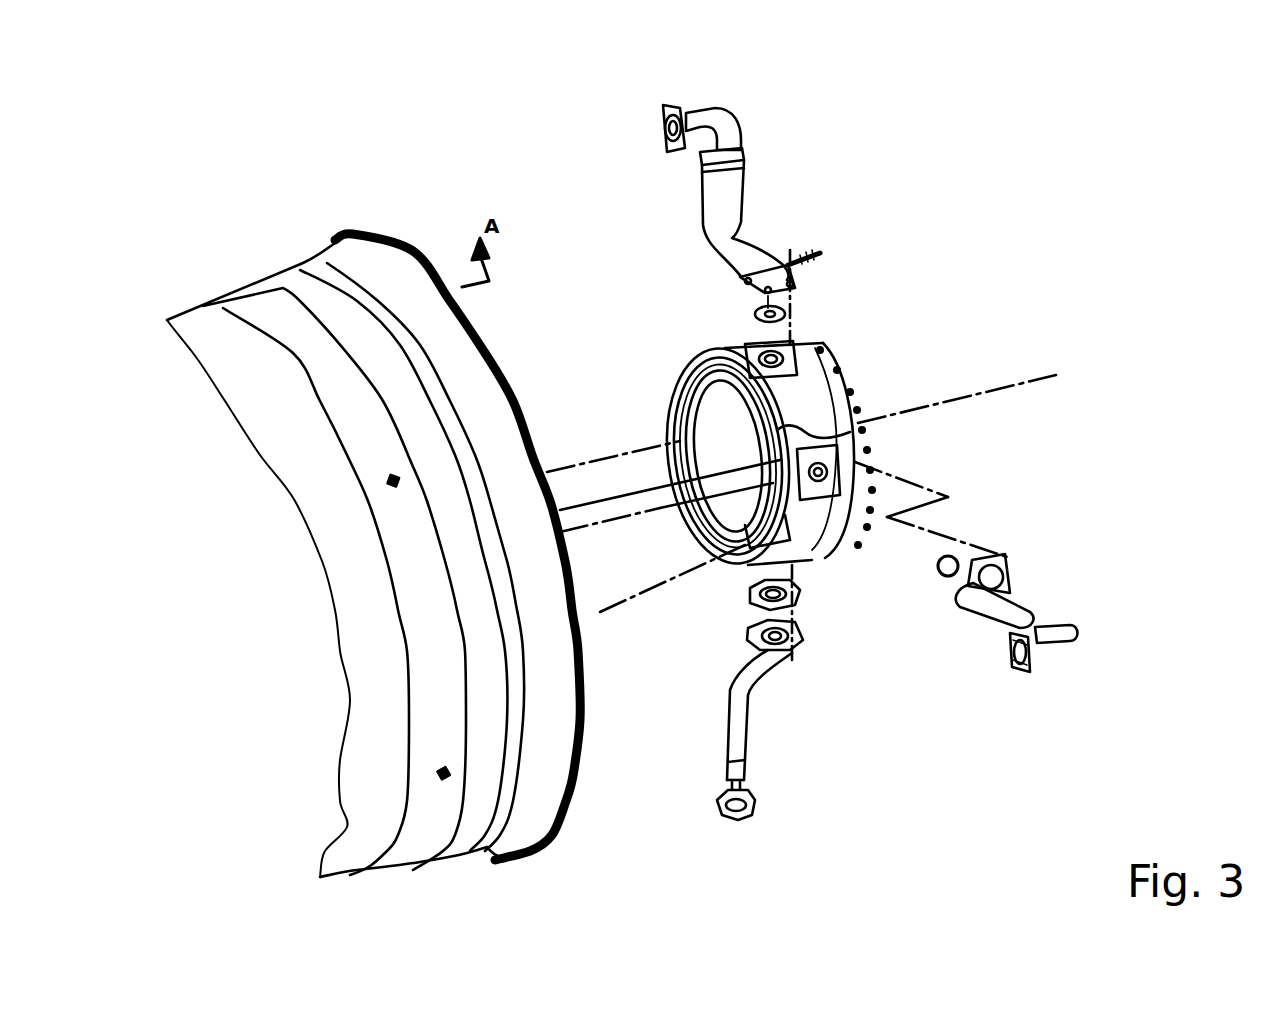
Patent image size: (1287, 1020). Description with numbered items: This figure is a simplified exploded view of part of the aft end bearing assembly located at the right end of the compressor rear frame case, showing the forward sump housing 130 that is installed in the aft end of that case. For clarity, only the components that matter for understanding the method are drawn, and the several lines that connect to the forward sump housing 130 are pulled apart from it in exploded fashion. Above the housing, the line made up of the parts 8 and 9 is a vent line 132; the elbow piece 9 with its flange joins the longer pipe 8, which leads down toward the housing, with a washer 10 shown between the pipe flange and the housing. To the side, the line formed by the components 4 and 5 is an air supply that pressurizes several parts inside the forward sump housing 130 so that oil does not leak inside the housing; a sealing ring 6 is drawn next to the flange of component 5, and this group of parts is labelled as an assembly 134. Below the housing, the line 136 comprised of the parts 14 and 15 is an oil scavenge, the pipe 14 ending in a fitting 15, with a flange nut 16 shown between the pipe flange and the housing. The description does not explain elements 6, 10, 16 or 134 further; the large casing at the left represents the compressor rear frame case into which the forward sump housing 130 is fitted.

The air supply line component 4 is at (1055, 603).
The air supply line component 5 is at (978, 628).
The sealing ring 6 is at (935, 567).
The vent line part 8 is at (745, 183).
The vent line part 9 is at (738, 132).
The washer 10 is at (752, 315).
The oil scavenge line part 14 is at (728, 686).
The oil scavenge line part 15 is at (760, 804).
The flange nut 16 is at (746, 600).
The forward sump housing 130 is at (807, 395).
The vent line 132 is at (839, 199).
The lower pipe assembly 134 is at (1001, 656).
The oil scavenge line 136 is at (687, 843).